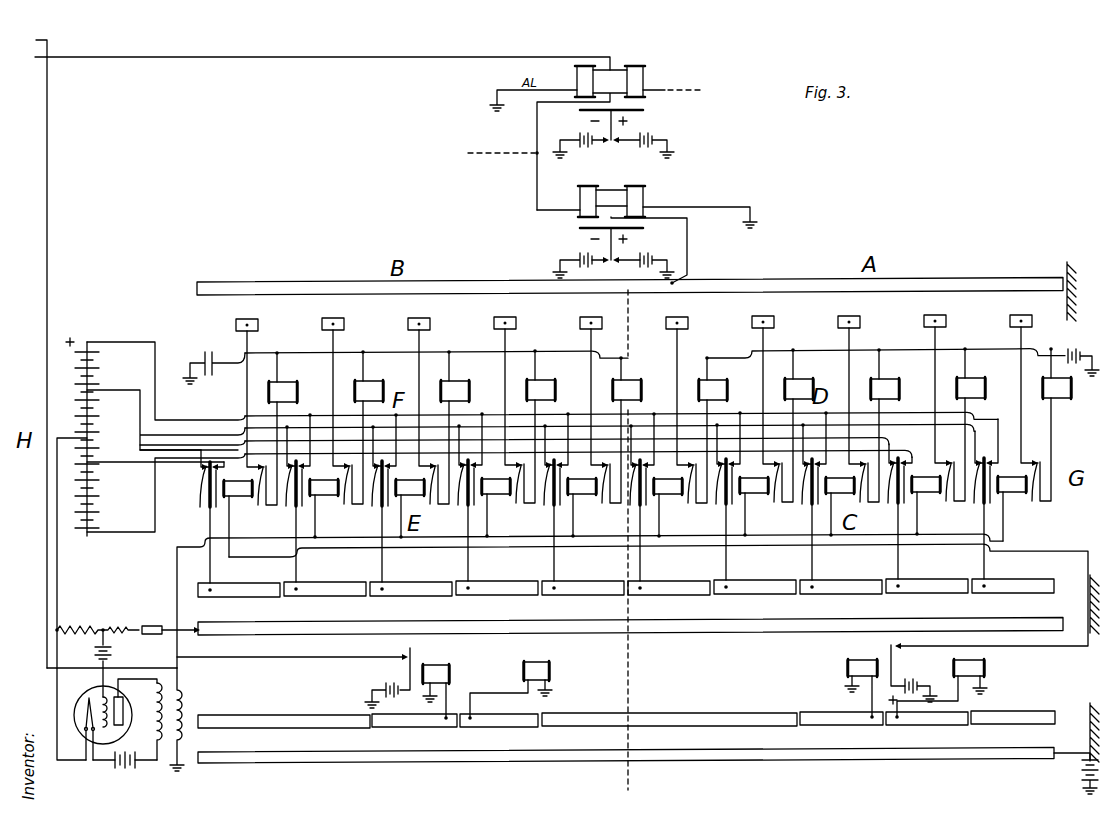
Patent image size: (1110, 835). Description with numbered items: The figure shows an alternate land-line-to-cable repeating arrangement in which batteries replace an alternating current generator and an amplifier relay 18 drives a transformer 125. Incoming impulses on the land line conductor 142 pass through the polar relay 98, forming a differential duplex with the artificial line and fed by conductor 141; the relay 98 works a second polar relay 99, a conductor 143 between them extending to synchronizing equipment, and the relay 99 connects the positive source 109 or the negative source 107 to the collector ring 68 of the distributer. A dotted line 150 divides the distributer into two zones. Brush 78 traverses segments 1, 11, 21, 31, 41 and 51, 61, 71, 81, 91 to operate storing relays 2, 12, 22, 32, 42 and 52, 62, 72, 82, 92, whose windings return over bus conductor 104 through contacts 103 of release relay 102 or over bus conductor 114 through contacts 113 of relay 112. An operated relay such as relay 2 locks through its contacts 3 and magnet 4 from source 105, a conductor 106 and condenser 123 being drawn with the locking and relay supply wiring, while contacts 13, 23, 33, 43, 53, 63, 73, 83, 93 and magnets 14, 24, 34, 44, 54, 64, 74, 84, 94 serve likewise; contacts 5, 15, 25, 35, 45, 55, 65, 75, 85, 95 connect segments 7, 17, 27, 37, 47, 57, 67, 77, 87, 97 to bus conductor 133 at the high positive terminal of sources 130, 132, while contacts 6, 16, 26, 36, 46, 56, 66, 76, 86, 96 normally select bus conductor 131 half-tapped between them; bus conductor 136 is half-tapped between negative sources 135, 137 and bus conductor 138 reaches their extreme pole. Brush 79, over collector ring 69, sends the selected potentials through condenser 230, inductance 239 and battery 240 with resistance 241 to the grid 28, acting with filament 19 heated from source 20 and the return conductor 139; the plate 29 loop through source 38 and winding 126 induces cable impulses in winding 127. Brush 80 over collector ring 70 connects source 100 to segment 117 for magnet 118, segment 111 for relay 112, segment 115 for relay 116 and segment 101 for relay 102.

The segment 1 is at (1024, 379).
The storing relay 2 is at (1012, 508).
The contacts 3 is at (1026, 491).
The magnet 4 is at (1056, 424).
The contacts 5 is at (991, 472).
The contacts 6 is at (969, 481).
The segment 7 is at (1013, 548).
The segment 11 is at (938, 379).
The storing relay 12 is at (926, 506).
The contacts 13 is at (939, 491).
The magnet 14 is at (970, 424).
The contacts 15 is at (908, 491).
The contacts 16 is at (882, 488).
The segment 17 is at (927, 548).
The segment 21 is at (852, 380).
The storing relay 22 is at (840, 507).
The contacts 23 is at (853, 492).
The magnet 24 is at (884, 425).
The contacts 25 is at (822, 469).
The contacts 26 is at (796, 478).
The segment 27 is at (841, 549).
The segment 31 is at (766, 380).
The storing relay 32 is at (754, 507).
The contacts 33 is at (767, 492).
The magnet 34 is at (798, 425).
The contacts 35 is at (736, 469).
The contacts 36 is at (710, 478).
The segment 37 is at (755, 549).
The segment 41 is at (680, 381).
The storing relay 42 is at (668, 508).
The contacts 43 is at (681, 493).
The magnet 44 is at (712, 429).
The contacts 45 is at (650, 470).
The normal contacts 46 is at (624, 479).
The segment 47 is at (669, 550).
The segment 51 is at (594, 381).
The storing relay 52 is at (582, 508).
The contacts 53 is at (595, 493).
The magnet 54 is at (626, 429).
The contacts 55 is at (564, 470).
The contacts 56 is at (538, 479).
The segment 57 is at (583, 550).
The segment 61 is at (508, 381).
The storing relay 62 is at (496, 508).
The contacts 63 is at (509, 493).
The magnet 64 is at (540, 426).
The contacts 65 is at (478, 470).
The contacts 66 is at (452, 479).
The segment 67 is at (497, 550).
The segment 71 is at (422, 382).
The storing relay 72 is at (410, 509).
The contacts 73 is at (423, 494).
The magnet 74 is at (454, 427).
The contacts 75 is at (392, 471).
The contacts 76 is at (366, 480).
The segment 77 is at (411, 551).
The segment 81 is at (336, 382).
The storing relay 82 is at (324, 509).
The contacts 83 is at (337, 494).
The magnet 84 is at (368, 427).
The contacts 85 is at (306, 471).
The contacts 86 is at (280, 480).
The segment 87 is at (325, 551).
The segment 91 is at (250, 383).
The storing relay 92 is at (238, 518).
The contacts 93 is at (251, 495).
The magnet 94 is at (282, 428).
The contacts 95 is at (220, 496).
The contacts 96 is at (194, 493).
The segment 97 is at (239, 552).
The amplifier relay 18 is at (90, 698).
The filament 19 is at (86, 731).
The source 20 is at (84, 767).
The grid 28 is at (94, 763).
The plate 29 is at (126, 699).
The source of direct current 38 is at (137, 772).
The collector ring 68 is at (736, 282).
The collector ring 69 is at (742, 632).
The collector ring 70 is at (730, 765).
The brush 78 is at (1070, 296).
The brush 79 is at (1090, 606).
The brush 80 is at (1090, 728).
The polar relay 98 is at (605, 138).
The polar relay 99 is at (647, 235).
The source of current 100 is at (1082, 768).
The segment 101 is at (424, 730).
The release relay 102 is at (440, 661).
The contacts 103 is at (406, 657).
The bus conductor 104 is at (177, 552).
The source 105 is at (1073, 348).
The conductor 106 is at (880, 347).
The source 107 is at (577, 256).
The source 109 is at (653, 257).
The segment 111 is at (852, 729).
The relay 112 is at (861, 662).
The contacts 113 is at (897, 649).
The bus conductor 114 is at (658, 607).
The segment 115 is at (512, 729).
The printing cycle control relay 116 is at (540, 658).
The segment 117 is at (946, 729).
The magnet 118 is at (985, 661).
The condenser 123 is at (212, 343).
The transformer 125 is at (163, 687).
The winding 126 is at (148, 735).
The winding 127 is at (183, 711).
The source of current 130 is at (50, 50).
The bus conductor 131 is at (166, 429).
The source of current 132 is at (96, 371).
The bus conductor 133 is at (150, 340).
The source of current 135 is at (94, 455).
The bus conductor 136 is at (95, 481).
The source of current 137 is at (94, 508).
The bus conductor 138 is at (102, 530).
The conductor 139 is at (58, 568).
The conductor 141 is at (168, 58).
The land line conductor 142 is at (667, 89).
The conductor 143 is at (503, 157).
The dotted line 150 is at (628, 652).
The condenser 230 is at (153, 619).
The inductance 239 is at (119, 627).
The battery 240 is at (114, 651).
The resistance 241 is at (64, 625).